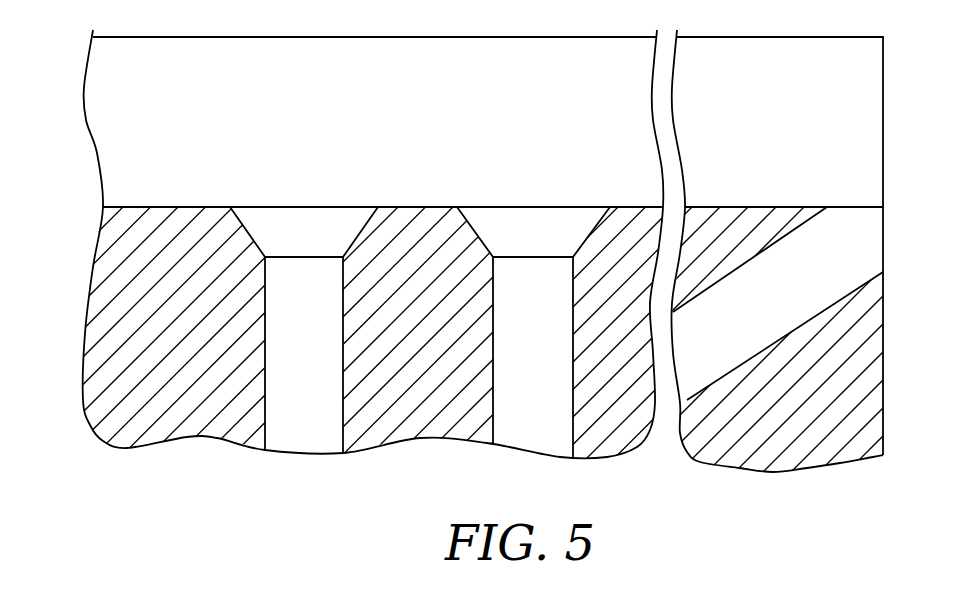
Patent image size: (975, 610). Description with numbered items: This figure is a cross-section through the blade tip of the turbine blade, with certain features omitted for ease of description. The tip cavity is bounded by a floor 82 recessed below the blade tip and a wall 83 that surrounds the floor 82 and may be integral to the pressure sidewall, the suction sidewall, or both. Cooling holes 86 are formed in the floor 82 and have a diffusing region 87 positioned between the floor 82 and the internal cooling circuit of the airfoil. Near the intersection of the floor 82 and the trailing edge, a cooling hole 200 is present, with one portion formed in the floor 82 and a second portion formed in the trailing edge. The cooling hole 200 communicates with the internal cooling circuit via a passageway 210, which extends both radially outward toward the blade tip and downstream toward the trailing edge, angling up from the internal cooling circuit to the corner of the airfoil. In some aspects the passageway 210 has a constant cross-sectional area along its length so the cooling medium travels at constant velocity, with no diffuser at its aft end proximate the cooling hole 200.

The floor 82 is at (189, 205).
The wall 83 is at (308, 107).
The cooling holes 86 is at (490, 207).
The diffusing region 87 is at (464, 255).
The cooling hole 200 is at (842, 205).
The passageway 210 is at (871, 270).